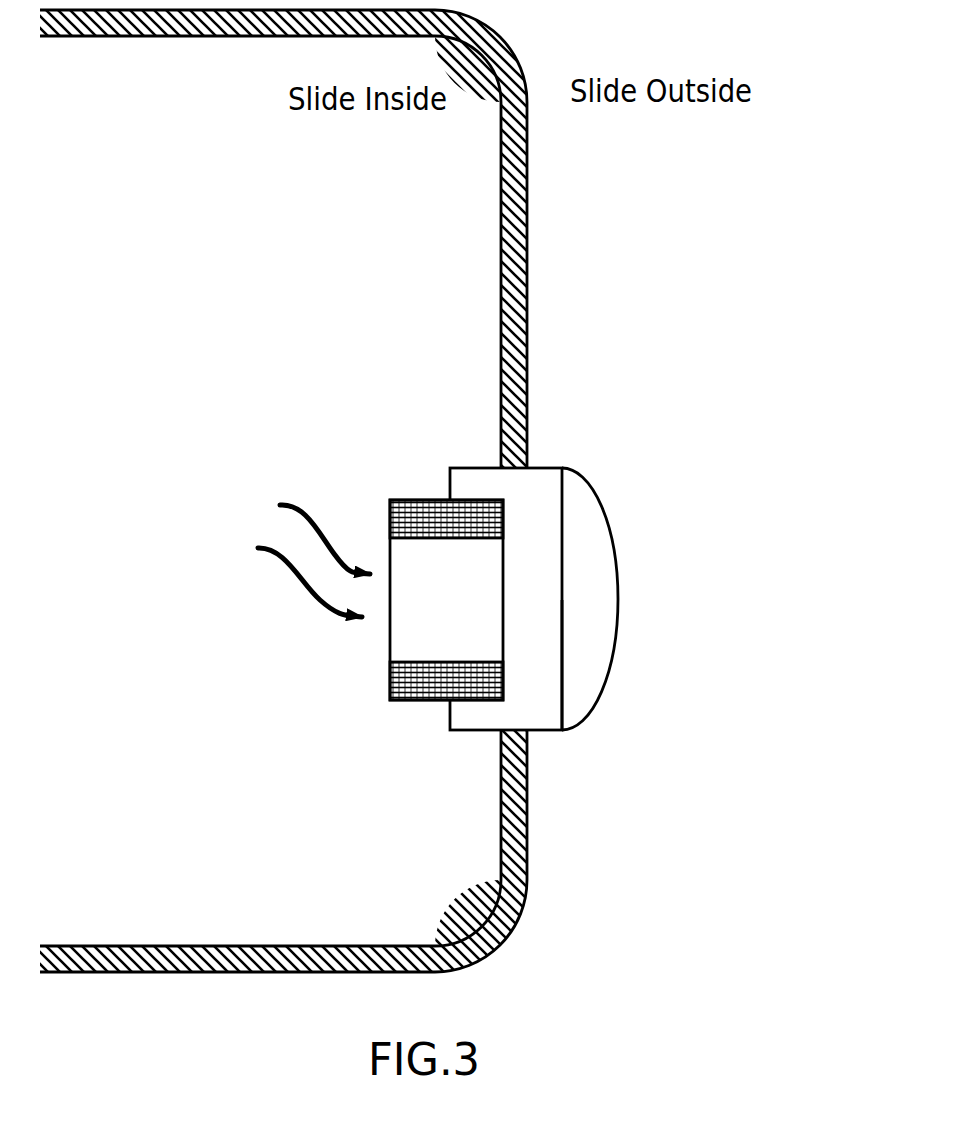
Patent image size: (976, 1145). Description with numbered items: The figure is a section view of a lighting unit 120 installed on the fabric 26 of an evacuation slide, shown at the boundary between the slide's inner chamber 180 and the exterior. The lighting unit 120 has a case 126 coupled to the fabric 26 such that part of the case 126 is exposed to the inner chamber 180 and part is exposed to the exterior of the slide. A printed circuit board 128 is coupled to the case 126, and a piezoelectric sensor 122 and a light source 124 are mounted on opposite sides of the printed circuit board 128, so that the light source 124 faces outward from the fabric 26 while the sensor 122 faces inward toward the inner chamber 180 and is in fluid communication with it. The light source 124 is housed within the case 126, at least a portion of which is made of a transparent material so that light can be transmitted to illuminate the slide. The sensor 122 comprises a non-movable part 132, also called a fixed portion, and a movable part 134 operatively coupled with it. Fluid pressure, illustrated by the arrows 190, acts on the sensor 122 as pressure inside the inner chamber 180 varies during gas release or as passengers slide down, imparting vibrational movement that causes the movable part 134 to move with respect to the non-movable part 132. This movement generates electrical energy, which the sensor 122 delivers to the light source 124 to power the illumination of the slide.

The fabric 26 is at (532, 245).
The lighting unit 120 is at (444, 531).
The piezoelectric sensor 122 is at (402, 495).
The light source 124 is at (585, 568).
The case 126 is at (552, 464).
The printed circuit board 128 is at (565, 665).
The non-movable part 132 is at (388, 692).
The movable part 134 is at (388, 637).
The inner chamber 180 is at (162, 270).
The fluid pressure 190 is at (295, 559).